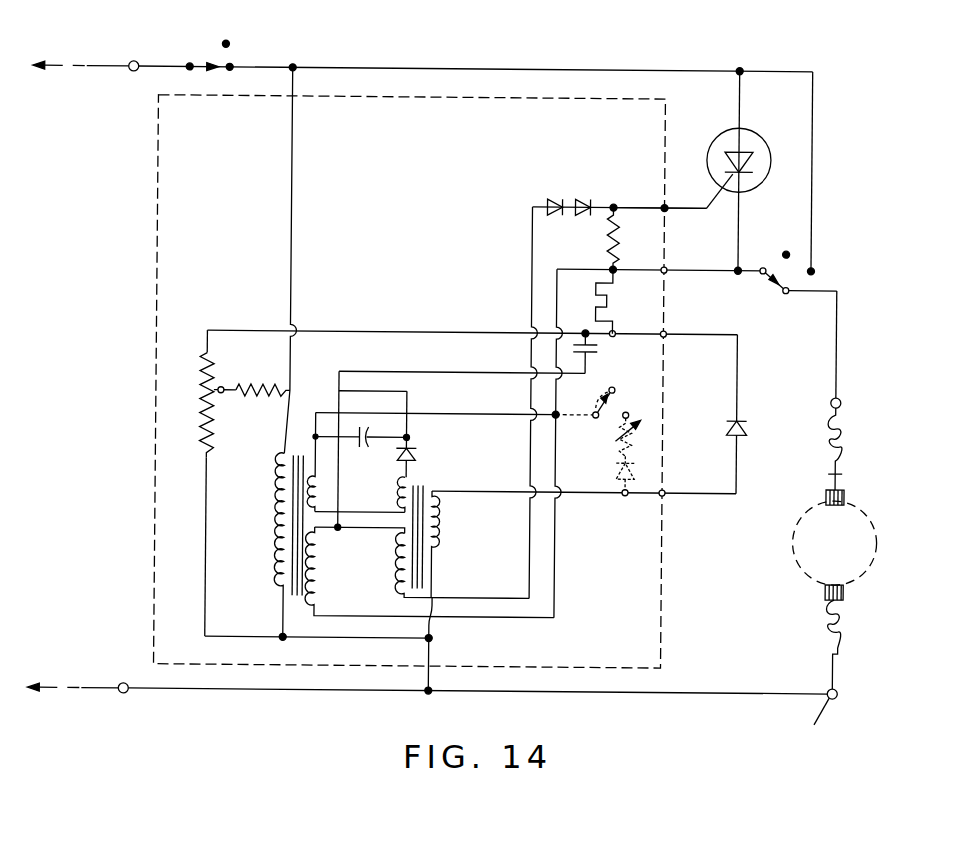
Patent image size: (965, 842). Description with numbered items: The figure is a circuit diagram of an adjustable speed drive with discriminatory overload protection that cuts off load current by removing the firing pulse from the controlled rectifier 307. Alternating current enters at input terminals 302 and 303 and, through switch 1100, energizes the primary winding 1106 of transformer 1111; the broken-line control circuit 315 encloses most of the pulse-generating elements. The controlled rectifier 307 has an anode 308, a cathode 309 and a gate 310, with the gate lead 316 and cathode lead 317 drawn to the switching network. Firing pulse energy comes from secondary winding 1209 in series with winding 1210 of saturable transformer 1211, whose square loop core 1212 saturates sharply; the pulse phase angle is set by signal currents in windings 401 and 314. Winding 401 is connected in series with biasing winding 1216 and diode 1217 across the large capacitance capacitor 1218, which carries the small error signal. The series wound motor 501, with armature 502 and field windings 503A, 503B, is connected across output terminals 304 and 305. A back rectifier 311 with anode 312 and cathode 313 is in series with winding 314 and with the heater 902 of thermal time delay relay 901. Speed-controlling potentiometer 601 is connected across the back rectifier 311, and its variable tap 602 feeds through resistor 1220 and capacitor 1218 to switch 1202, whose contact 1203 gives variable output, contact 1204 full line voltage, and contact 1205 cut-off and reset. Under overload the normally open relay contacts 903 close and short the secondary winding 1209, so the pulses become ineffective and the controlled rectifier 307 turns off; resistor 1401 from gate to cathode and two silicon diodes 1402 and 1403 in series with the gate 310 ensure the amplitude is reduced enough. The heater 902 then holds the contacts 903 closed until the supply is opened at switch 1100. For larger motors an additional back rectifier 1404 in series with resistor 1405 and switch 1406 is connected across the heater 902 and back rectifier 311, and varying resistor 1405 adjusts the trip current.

The switch 1100 is at (203, 66).
The input terminal 302 is at (127, 75).
The input terminal 303 is at (121, 684).
The output terminal 304 is at (833, 397).
The output terminal 305 is at (830, 697).
The controlled rectifier 307 is at (747, 171).
The anode 308 is at (742, 150).
The cathode 309 is at (752, 175).
The gate 310 is at (722, 173).
The back rectifier 311 is at (728, 414).
The anode 312 is at (738, 434).
The cathode 313 is at (737, 419).
The winding 314 is at (437, 533).
The control circuit 315 is at (372, 147).
The gate lead 316 is at (699, 208).
The cathode lead 317 is at (682, 272).
The voltage-sensitive winding 401 is at (402, 497).
The motor 501 is at (783, 545).
The armature 502 is at (796, 563).
The field winding 503A is at (847, 452).
The field winding 503B is at (848, 643).
The speed-controlling potentiometer 601 is at (215, 420).
The variable tap 602 is at (222, 389).
The thermal time delay relay 901 is at (570, 321).
The heater 902 is at (612, 300).
The relay contacts 903 is at (597, 350).
The primary winding 1106 is at (280, 557).
The transformer 1111 is at (260, 544).
The switch 1202 is at (806, 307).
The contact 1203 is at (760, 272).
The contact 1204 is at (813, 268).
The contact 1205 is at (785, 250).
The secondary winding 1209 is at (430, 533).
The winding 1210 is at (398, 580).
The saturable transformer 1211 is at (386, 552).
The core 1212 is at (420, 485).
The alternating current biasing winding 1216 is at (330, 483).
The diode 1217 is at (412, 458).
The capacitor 1218 is at (370, 432).
The resistor 1220 is at (264, 389).
The resistor 1401 is at (606, 238).
The silicon diode 1402 is at (555, 199).
The silicon diode 1403 is at (588, 200).
The additional back rectifier 1404 is at (616, 462).
The resistor 1405 is at (620, 426).
The switch 1406 is at (609, 388).